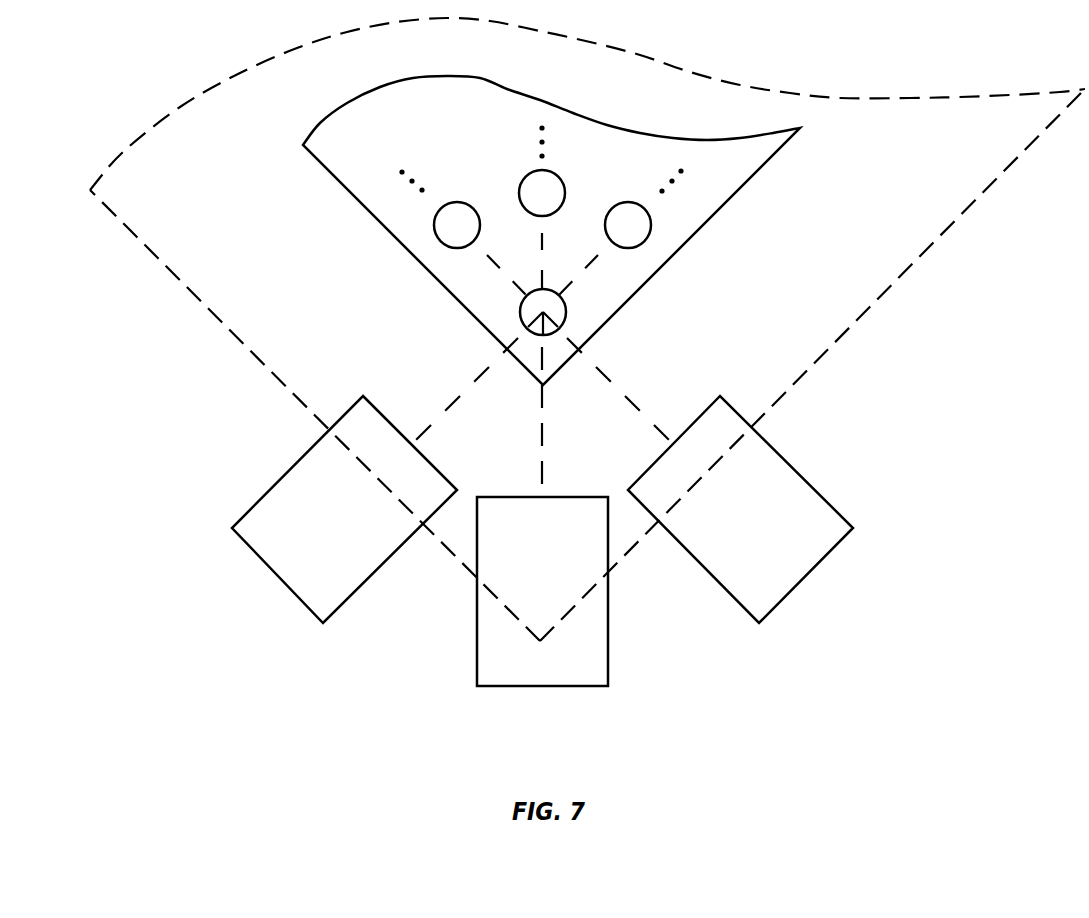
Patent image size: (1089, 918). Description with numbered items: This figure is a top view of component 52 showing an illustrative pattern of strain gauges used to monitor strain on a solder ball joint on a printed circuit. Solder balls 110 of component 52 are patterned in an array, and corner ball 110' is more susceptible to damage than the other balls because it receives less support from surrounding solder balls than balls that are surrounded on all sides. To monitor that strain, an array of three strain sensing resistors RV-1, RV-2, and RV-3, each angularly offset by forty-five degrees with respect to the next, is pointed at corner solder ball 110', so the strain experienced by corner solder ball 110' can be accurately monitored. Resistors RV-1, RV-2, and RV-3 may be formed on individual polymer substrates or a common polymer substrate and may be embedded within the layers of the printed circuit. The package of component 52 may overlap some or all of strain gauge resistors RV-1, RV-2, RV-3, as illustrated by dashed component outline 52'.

The component 52 is at (551, 230).
The dashed component outline 52' is at (587, 329).
The solder balls 110 is at (541, 186).
The corner ball 110' is at (485, 315).
The strain sensing resistor RV-1 is at (289, 593).
The strain sensing resistor RV-2 is at (560, 688).
The strain sensing resistor RV-3 is at (795, 592).